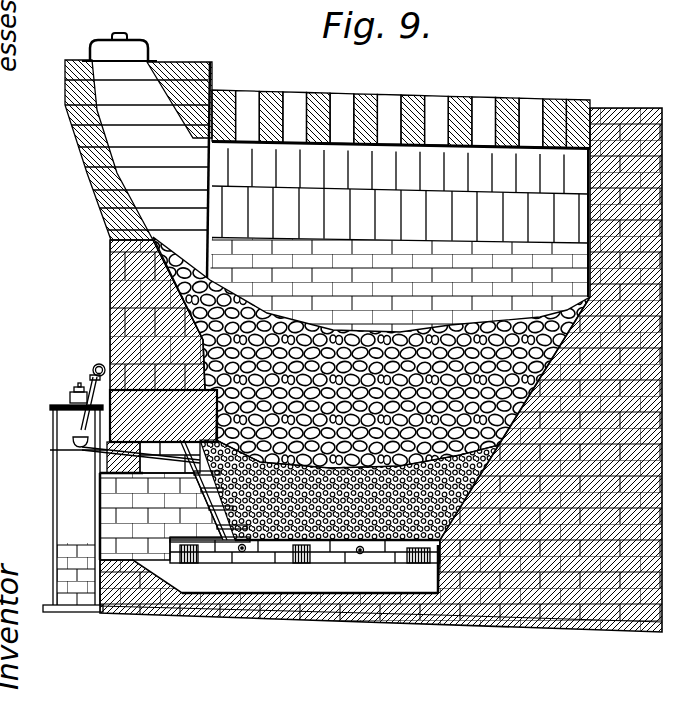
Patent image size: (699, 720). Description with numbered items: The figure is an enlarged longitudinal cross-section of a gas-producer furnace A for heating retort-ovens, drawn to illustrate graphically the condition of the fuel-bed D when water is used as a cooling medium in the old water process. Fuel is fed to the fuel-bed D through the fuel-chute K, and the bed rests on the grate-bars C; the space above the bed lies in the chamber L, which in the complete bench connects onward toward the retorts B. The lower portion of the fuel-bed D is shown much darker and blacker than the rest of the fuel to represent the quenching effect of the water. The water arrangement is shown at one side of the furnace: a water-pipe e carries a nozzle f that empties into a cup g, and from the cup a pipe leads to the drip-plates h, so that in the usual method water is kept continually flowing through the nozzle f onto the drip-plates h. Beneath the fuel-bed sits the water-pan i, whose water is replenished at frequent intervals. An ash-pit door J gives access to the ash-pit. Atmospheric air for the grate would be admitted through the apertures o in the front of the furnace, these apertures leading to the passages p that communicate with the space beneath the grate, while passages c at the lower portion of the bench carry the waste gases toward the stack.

The gas-producer furnace A is at (110, 222).
The fuel-chute K is at (117, 115).
The apertures o is at (288, 97).
The chamber L is at (313, 210).
The fuel-bed D is at (143, 303).
The retorts B is at (393, 340).
The drip-plates h is at (210, 573).
The ash-pit door J is at (123, 520).
The grate-bars C is at (200, 507).
The water-pipe e is at (93, 364).
The nozzle f is at (72, 393).
The cup g is at (73, 441).
The passages c is at (350, 543).
The passages p is at (440, 578).
The water-pan i is at (373, 587).